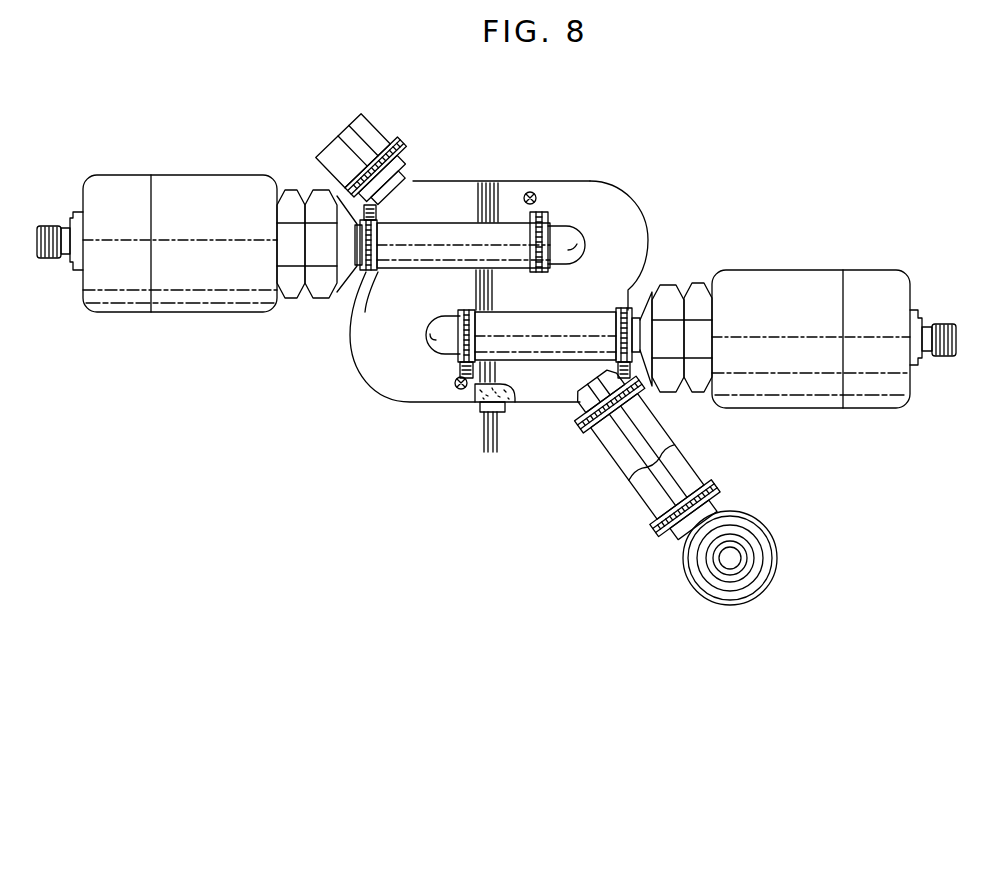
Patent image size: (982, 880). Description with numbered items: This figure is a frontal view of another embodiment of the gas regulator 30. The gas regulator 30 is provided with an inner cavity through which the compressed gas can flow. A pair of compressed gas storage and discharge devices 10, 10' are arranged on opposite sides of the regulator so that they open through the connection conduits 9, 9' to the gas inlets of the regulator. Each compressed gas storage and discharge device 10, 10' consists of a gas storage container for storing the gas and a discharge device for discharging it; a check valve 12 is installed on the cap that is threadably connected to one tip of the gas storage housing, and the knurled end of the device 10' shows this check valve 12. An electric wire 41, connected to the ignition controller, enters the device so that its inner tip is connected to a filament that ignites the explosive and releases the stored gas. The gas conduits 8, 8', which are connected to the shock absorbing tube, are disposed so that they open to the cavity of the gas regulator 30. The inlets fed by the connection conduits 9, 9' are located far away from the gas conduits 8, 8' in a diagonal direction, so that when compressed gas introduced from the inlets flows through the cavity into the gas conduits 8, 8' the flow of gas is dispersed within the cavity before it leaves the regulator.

The gas conduit 8 is at (369, 160).
The gas conduit 8' is at (669, 481).
The connection conduit 9 is at (472, 208).
The connection conduit 9' is at (550, 307).
The compressed gas storage and discharge device 10 is at (157, 259).
The compressed gas storage and discharge device 10' is at (817, 361).
The check valve 12 is at (941, 358).
The gas regulator 30 is at (566, 194).
The electric wire 41 is at (480, 428).